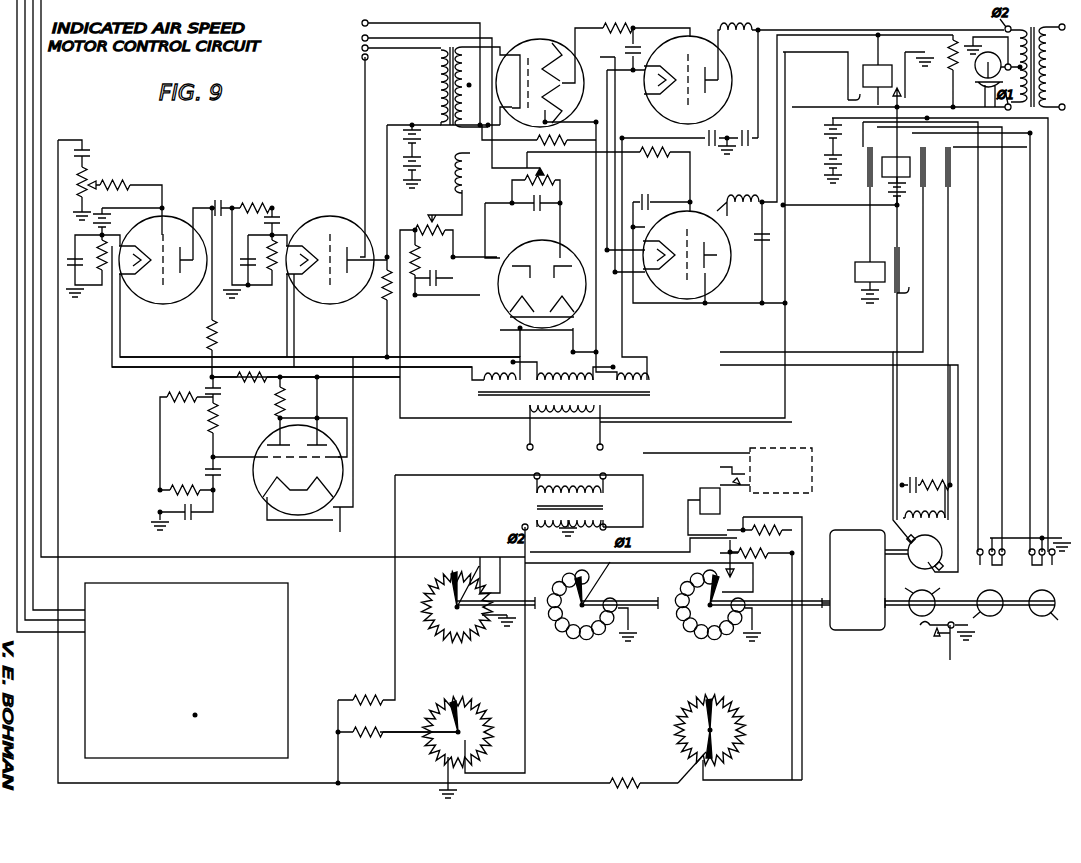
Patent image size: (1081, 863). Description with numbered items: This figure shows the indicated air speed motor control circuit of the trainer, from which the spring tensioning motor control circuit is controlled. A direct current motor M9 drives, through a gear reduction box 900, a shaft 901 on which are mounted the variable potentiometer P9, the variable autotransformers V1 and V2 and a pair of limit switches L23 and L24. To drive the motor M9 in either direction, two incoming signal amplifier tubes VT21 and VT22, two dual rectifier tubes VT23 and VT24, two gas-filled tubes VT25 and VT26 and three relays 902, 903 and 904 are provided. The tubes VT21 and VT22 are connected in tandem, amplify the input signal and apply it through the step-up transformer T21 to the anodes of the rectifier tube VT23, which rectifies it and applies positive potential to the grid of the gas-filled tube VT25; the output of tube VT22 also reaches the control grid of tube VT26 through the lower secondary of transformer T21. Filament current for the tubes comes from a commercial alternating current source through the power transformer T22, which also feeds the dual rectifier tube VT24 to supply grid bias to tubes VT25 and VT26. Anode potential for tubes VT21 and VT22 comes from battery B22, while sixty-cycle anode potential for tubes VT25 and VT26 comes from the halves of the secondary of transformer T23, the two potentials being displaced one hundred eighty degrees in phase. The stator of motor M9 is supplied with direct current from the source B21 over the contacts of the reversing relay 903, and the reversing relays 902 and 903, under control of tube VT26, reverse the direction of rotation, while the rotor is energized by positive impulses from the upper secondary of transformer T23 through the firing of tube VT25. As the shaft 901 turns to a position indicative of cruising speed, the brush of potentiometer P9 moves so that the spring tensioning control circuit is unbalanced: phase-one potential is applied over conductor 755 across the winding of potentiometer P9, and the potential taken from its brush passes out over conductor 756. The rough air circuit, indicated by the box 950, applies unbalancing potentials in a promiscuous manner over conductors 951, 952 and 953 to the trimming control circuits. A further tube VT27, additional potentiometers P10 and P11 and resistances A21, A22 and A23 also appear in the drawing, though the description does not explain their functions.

The conductor 755 is at (40, 80).
The conductor 756 is at (40, 97).
The conductor 951 is at (17, 397).
The conductor 952 is at (25, 413).
The conductor 953 is at (33, 430).
The incoming signal amplifier tube VT21 is at (178, 215).
The incoming signal amplifier tube VT22 is at (348, 215).
The dual rectifier tube VT23 is at (530, 45).
The dual rectifier tube VT24 is at (540, 252).
The gas-filled tube VT25 is at (700, 42).
The gas-filled tube VT26 is at (705, 213).
The vacuum tube VT27 is at (258, 455).
The step-up transformer T21 is at (435, 82).
The power transformer T22 is at (650, 392).
The transformer T23 is at (1047, 22).
The source B21 is at (832, 128).
The battery B22 is at (428, 172).
The reversing relay 902 is at (863, 78).
The reversing relay 903 is at (880, 168).
The relay 904 is at (855, 274).
The direct current motor M9 is at (839, 462).
The gear reduction box 900 is at (856, 545).
The shaft 901 is at (810, 608).
The limit switch L23 is at (975, 591).
The limit switch L24 is at (1040, 580).
The variable potentiometer P9 is at (440, 643).
The potentiometer P10 is at (487, 703).
The potentiometer P11 is at (737, 705).
The variable autotransformer V1 is at (567, 643).
The variable autotransformer V2 is at (717, 645).
The resistor A21 is at (365, 696).
The resistor A22 is at (626, 775).
The resistor A23 is at (358, 738).
The rough air circuit 950 is at (288, 652).